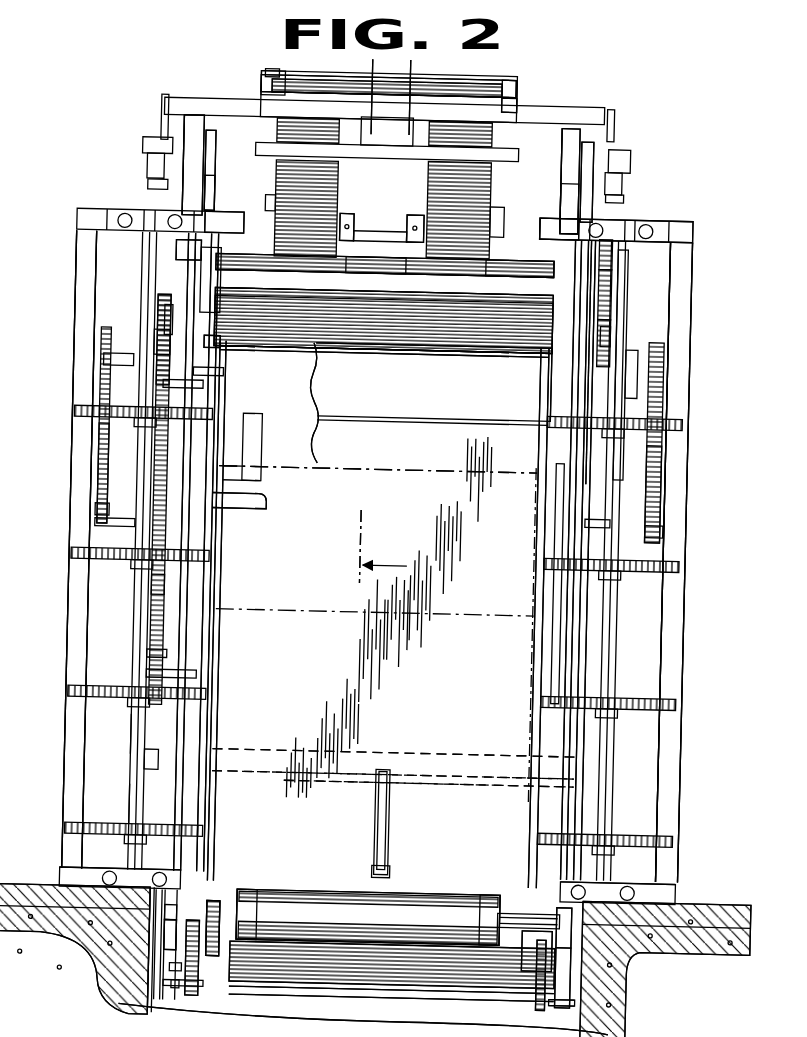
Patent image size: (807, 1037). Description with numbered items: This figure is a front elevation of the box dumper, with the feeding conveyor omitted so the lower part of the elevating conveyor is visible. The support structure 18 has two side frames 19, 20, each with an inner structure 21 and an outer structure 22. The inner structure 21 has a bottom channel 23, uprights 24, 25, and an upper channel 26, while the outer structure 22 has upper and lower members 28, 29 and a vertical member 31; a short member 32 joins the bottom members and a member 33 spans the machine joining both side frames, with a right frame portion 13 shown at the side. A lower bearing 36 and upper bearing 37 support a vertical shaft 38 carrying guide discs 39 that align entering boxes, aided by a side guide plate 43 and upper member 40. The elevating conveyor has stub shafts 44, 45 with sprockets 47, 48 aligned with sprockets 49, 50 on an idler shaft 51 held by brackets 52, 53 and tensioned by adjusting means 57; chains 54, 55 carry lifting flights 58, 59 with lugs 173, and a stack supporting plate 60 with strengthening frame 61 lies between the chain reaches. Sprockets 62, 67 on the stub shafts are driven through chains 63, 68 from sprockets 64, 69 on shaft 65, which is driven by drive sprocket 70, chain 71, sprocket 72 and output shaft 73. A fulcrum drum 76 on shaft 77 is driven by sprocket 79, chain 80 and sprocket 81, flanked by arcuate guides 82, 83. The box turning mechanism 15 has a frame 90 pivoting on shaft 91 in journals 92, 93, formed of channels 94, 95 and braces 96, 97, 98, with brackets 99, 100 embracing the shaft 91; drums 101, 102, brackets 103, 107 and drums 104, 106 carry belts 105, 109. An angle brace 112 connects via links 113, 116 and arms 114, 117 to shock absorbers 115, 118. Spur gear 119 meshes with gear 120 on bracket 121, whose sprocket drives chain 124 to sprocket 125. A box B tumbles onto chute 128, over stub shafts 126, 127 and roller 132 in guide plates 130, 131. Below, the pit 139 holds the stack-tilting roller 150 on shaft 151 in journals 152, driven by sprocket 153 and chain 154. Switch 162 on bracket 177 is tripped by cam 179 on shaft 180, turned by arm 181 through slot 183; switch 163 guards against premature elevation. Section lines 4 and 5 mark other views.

The section line 4- 4 is at (148, 733).
The section line 5- 5 is at (370, 62).
The right frame 13 is at (694, 352).
The box turning mechanism 15 is at (512, 78).
The box dumper support structure 18 is at (692, 222).
The side frame 19 is at (66, 584).
The side frame 20 is at (686, 614).
The inner structure 21 is at (190, 637).
The outer structure 22 is at (66, 664).
The bottom horizontal channel member 23 is at (185, 862).
The upright member 24 is at (200, 144).
The upright member 25 is at (175, 715).
The upper horizontal channel member 26 is at (200, 192).
The upper horizontal member 28 is at (78, 216).
The lower horizontal member 29 is at (65, 888).
The vertical member 31 is at (75, 609).
The short member 32 is at (80, 880).
The member 33 is at (105, 215).
The lower bearing 36 is at (130, 882).
The upper bearing 37 is at (145, 215).
The vertical shaft 38 is at (145, 606).
The guide disc 39 is at (78, 410).
The upper member 40 is at (190, 120).
The side guide plate 43 is at (200, 560).
The stub shaft 44 is at (130, 375).
The stub shaft 45 is at (632, 375).
The sprocket 47 is at (215, 350).
The sprocket 48 is at (532, 355).
The sprocket 49 is at (220, 975).
The sprocket 50 is at (560, 980).
The idler shaft 51 is at (332, 945).
The bracket 52 is at (170, 952).
The bracket 53 is at (585, 995).
The endless chain 54 is at (230, 380).
The endless chain 55 is at (560, 1010).
The adjusting means 57 is at (175, 990).
The box lifting flight 58 is at (375, 975).
The box lifting flight 59 is at (418, 350).
The stack supporting plate 60 is at (378, 487).
The strengthening frame 61 is at (262, 474).
The sprocket 62 is at (100, 351).
The chain 63 is at (105, 458).
The sprocket 64 is at (100, 514).
The shaft 65 is at (120, 530).
The sprocket 67 is at (660, 373).
The chain 68 is at (660, 458).
The sprocket 69 is at (656, 532).
The drive sprocket 70 is at (165, 520).
The chain 71 is at (160, 590).
The sprocket 72 is at (165, 660).
The output shaft 73 is at (170, 680).
The fulcrum drum 76 is at (362, 320).
The shaft 77 is at (160, 318).
The sprocket 79 is at (152, 310).
The chain 80 is at (165, 345).
The sprocket 81 is at (170, 395).
The arcuate guide member 82 is at (215, 280).
The arcuate guide member 83 is at (560, 291).
The frame 90 is at (520, 84).
The shaft 91 is at (405, 233).
The journal 92 is at (205, 232).
The journal 93 is at (580, 240).
The channel member 94 is at (270, 80).
The channel member 95 is at (512, 108).
The brace member 96 is at (406, 162).
The brace member 97 is at (278, 96).
The brace member 98 is at (462, 78).
The bracket 99 is at (270, 205).
The bracket 100 is at (505, 216).
The drum 101 is at (346, 208).
The drum 102 is at (412, 215).
The bracket 103 is at (368, 100).
The drum 104 is at (275, 130).
The belt 105 is at (292, 185).
The drum 106 is at (500, 133).
The bracket 107 is at (410, 95).
The belt 109 is at (500, 190).
The angle brace 112 is at (255, 105).
The link 113 is at (615, 125).
The arm 114 is at (622, 182).
The shock absorber 115 is at (625, 160).
The link 116 is at (163, 110).
The arm 117 is at (152, 165).
The shock absorber 118 is at (165, 146).
The spur gear 119 is at (612, 240).
The spur gear 120 is at (612, 263).
The bracket 121 is at (605, 276).
The chain 124 is at (625, 300).
The sprocket 125 is at (572, 340).
The stub shaft 126 is at (175, 258).
The stub shaft 127 is at (525, 272).
The chute 128 is at (305, 398).
The guide plate 130 is at (205, 160).
The guide plate 131 is at (575, 192).
The fulcrum roller 132 is at (355, 262).
The pit 139 is at (363, 1019).
The stack-tilting roller 150 is at (368, 917).
The shaft 151 is at (500, 918).
The journal 152 is at (180, 915).
The sprocket 153 is at (240, 935).
The chain 154 is at (218, 910).
The switch 162 is at (160, 757).
The switch 163 is at (200, 300).
The lug 173 is at (195, 972).
The bracket 177 is at (215, 745).
The cam 179 is at (215, 767).
The shaft 180 is at (470, 778).
The arm 181 is at (386, 833).
The slot 183 is at (386, 870).
The box B is at (351, 620).